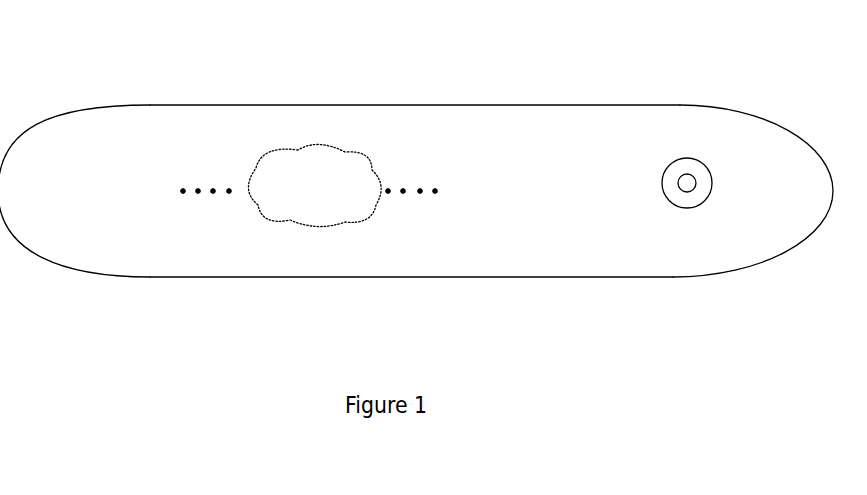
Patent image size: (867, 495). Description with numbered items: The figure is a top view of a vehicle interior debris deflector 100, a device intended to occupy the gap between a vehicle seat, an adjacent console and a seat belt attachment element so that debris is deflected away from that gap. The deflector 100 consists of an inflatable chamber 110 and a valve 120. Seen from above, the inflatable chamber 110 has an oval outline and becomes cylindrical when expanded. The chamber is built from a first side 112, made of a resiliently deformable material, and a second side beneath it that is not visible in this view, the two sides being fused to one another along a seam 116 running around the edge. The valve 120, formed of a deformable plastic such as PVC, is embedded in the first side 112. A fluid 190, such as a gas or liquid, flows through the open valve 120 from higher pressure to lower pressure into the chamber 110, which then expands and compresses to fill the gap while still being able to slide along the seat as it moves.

The vehicle interior debris deflector 100 is at (75, 161).
The inflatable chamber 110 is at (403, 88).
The first side 112 is at (620, 122).
The seam 116 is at (643, 277).
The valve 120 is at (688, 158).
The fluid 190 is at (314, 249).